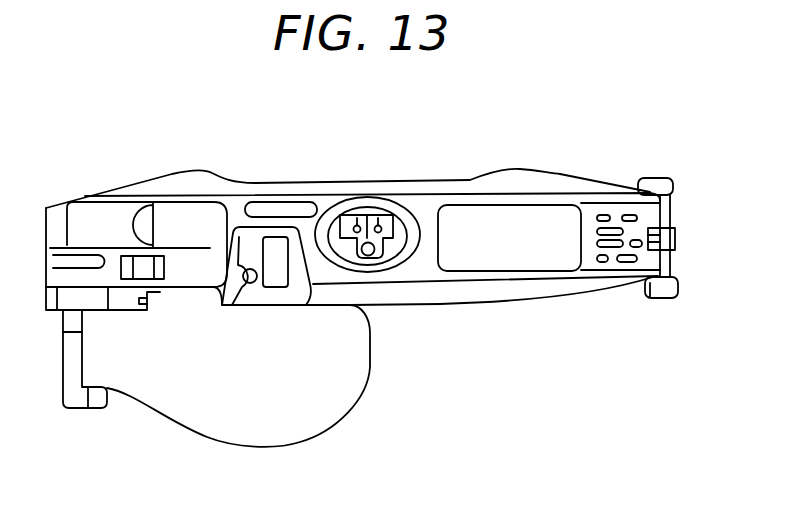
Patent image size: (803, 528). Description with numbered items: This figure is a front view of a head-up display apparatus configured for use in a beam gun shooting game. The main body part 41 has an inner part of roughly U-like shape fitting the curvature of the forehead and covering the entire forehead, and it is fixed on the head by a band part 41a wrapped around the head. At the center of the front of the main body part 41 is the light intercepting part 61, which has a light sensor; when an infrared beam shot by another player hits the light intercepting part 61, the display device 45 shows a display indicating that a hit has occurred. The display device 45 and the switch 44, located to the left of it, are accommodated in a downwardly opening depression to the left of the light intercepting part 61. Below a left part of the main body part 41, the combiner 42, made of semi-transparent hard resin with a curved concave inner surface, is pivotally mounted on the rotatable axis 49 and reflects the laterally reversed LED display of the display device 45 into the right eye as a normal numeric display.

The main body part 41 is at (567, 163).
The band part 41a is at (676, 214).
The combiner 42 is at (318, 415).
The switch 44 is at (147, 262).
The display device 45 is at (277, 245).
The rotatable axis 49 is at (83, 408).
The light intercepting part 61 is at (373, 217).